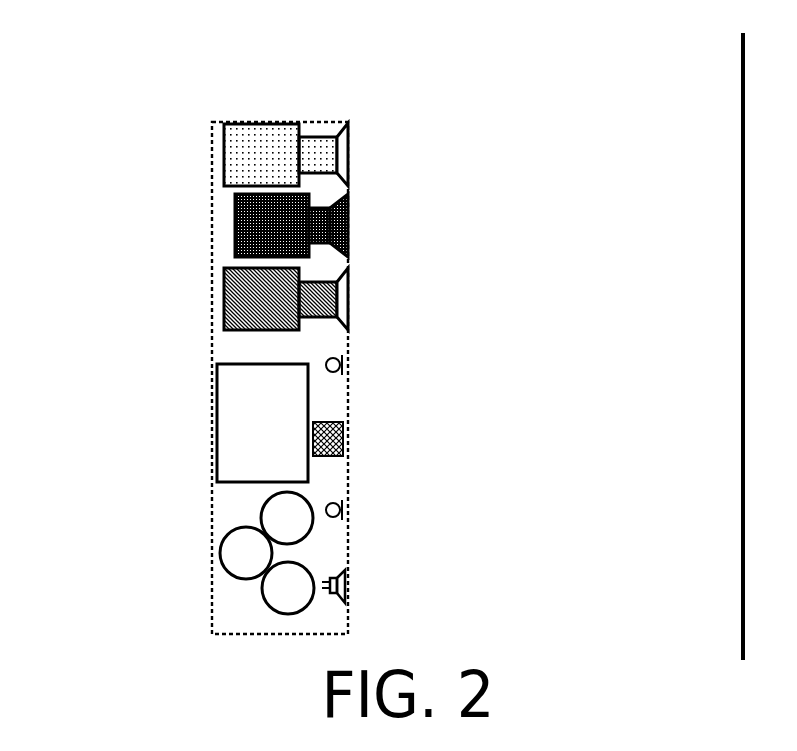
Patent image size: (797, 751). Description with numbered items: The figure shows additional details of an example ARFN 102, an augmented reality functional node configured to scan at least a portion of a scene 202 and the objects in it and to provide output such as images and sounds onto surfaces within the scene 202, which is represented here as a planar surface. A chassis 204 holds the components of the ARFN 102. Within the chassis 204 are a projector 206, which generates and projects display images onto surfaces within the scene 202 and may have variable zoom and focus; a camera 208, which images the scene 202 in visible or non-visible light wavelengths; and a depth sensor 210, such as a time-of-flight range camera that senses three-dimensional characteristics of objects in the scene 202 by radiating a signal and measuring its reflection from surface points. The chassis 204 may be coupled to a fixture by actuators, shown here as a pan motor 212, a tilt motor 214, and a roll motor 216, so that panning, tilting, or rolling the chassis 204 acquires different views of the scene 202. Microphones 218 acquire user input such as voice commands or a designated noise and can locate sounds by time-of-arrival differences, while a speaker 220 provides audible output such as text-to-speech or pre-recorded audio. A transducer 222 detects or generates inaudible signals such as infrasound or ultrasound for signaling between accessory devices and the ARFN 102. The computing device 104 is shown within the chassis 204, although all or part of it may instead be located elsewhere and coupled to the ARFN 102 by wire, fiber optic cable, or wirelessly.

The ARFN 102 is at (225, 122).
The computing device 104 is at (233, 397).
The scene 202 is at (741, 42).
The chassis 204 is at (315, 125).
The projector 206 is at (233, 147).
The camera 208 is at (235, 231).
The depth sensor 210 is at (226, 293).
The pan motor 212 is at (270, 510).
The tilt motor 214 is at (223, 551).
The roll motor 216 is at (268, 589).
The microphone 218 is at (342, 364).
The speaker 220 is at (345, 588).
The transducer 222 is at (343, 433).